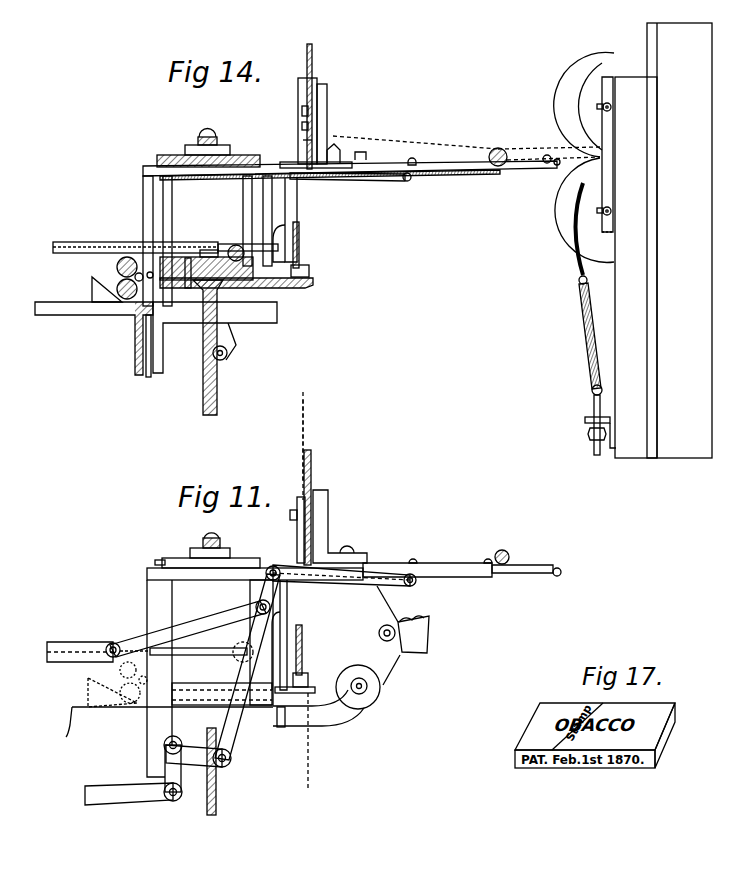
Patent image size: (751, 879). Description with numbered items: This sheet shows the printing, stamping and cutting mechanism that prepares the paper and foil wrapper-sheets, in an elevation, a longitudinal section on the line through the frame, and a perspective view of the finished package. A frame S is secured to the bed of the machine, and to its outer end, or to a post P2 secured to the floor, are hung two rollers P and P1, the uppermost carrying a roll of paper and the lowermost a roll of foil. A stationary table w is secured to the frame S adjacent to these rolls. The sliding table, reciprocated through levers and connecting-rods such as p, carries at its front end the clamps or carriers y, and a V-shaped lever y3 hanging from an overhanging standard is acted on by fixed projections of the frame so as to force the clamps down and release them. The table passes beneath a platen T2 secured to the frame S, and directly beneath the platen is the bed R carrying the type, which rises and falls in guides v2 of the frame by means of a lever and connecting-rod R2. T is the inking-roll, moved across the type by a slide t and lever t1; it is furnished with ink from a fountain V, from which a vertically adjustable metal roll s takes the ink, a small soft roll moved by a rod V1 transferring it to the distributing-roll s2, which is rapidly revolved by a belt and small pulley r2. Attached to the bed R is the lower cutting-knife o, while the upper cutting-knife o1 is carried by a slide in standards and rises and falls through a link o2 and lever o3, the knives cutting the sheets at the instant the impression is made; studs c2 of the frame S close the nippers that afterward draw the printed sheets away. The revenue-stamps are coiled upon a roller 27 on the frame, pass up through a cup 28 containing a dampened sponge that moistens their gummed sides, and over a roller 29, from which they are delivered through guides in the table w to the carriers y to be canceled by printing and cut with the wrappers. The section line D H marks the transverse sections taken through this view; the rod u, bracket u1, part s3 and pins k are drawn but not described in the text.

In FIG. 14, the vertical rod u is at (306, 98).
In FIG. 11, the vertical rod u is at (308, 482).
In FIG. 14, the rod guide bracket u1 is at (316, 121).
In FIG. 11, the rod guide bracket u1 is at (328, 526).
In FIG. 14, the upper cutting-knife o1 is at (302, 142).
In FIG. 14, the V-shaped lever y3 is at (336, 150).
In FIG. 14, the clamps or carriers y is at (361, 148).
In FIG. 11, the clamps or carriers y is at (502, 551).
In FIG. 14, the platen T2 is at (208, 148).
In FIG. 11, the platen T2 is at (211, 550).
In FIG. 14, the guides v2 is at (143, 172).
In FIG. 14, the lower cutting-knife o is at (302, 268).
In FIG. 11, the lower cutting-knife o is at (296, 672).
In FIG. 14, the distributing-roll s2 is at (135, 238).
In FIG. 11, the distributing-roll s2 is at (133, 682).
In FIG. 14, the feed bar extension s3 is at (150, 248).
In FIG. 14, the ink fountain V is at (114, 279).
In FIG. 11, the ink fountain V is at (112, 691).
In FIG. 14, the metal roll s is at (129, 285).
In FIG. 14, the rod V1 is at (99, 348).
In FIG. 14, the frame S is at (215, 337).
In FIG. 11, the frame S is at (169, 678).
In FIG. 14, the bed R is at (236, 258).
In FIG. 11, the bed R is at (222, 694).
In FIG. 14, the slide t is at (195, 250).
In FIG. 11, the slide t is at (183, 647).
In FIG. 14, the inking-roll T is at (236, 246).
In FIG. 11, the inking-roll T is at (242, 647).
In FIG. 14, the connecting-rod p is at (198, 273).
In FIG. 11, the connecting-rod p is at (158, 770).
In FIG. 14, the connecting-rod R2 is at (212, 380).
In FIG. 11, the connecting-rod R2 is at (221, 771).
In FIG. 14, the section line D H is at (300, 429).
In FIG. 14, the stationary table w is at (466, 150).
In FIG. 11, the stationary table w is at (354, 569).
In FIG. 14, the roller P is at (604, 104).
In FIG. 14, the roller P1 is at (580, 216).
In FIG. 11, the roller P1 is at (247, 667).
In FIG. 14, the post P2 is at (663, 240).
In FIG. 14, the roller pins k is at (608, 154).
In FIG. 11, the studs c2 is at (155, 563).
In FIG. 11, the small pulley r2 is at (341, 575).
In FIG. 11, the lever t1 is at (158, 631).
In FIG. 11, the lever o3 is at (294, 635).
In FIG. 11, the link o2 is at (306, 650).
In FIG. 11, the section line D H D is at (307, 752).
In FIG. 11, the roller 27 is at (326, 696).
In FIG. 11, the cup 28 is at (403, 635).
In FIG. 11, the roller 29 is at (379, 633).